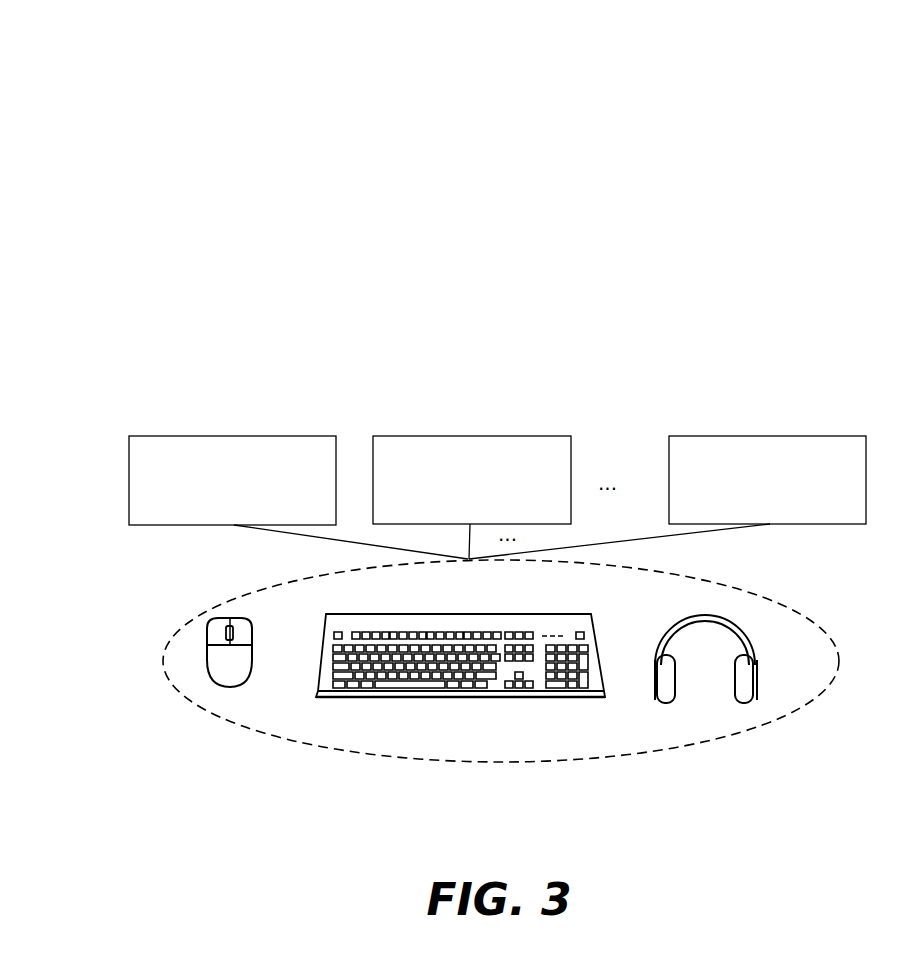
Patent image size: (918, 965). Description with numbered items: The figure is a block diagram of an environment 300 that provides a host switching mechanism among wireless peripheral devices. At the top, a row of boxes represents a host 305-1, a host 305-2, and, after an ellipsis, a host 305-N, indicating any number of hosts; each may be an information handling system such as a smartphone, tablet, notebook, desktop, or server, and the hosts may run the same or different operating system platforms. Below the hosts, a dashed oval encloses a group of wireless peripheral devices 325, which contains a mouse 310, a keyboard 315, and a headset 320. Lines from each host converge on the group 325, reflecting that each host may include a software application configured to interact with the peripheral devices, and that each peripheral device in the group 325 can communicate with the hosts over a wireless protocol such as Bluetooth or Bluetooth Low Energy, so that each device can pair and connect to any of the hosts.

The environment 300 is at (152, 54).
The host 305-1 is at (298, 497).
The host 305-2 is at (472, 497).
The host 305-N is at (667, 497).
The mouse 310 is at (234, 685).
The keyboard 315 is at (530, 697).
The headset 320 is at (750, 644).
The group of wireless peripheral devices 325 is at (777, 718).